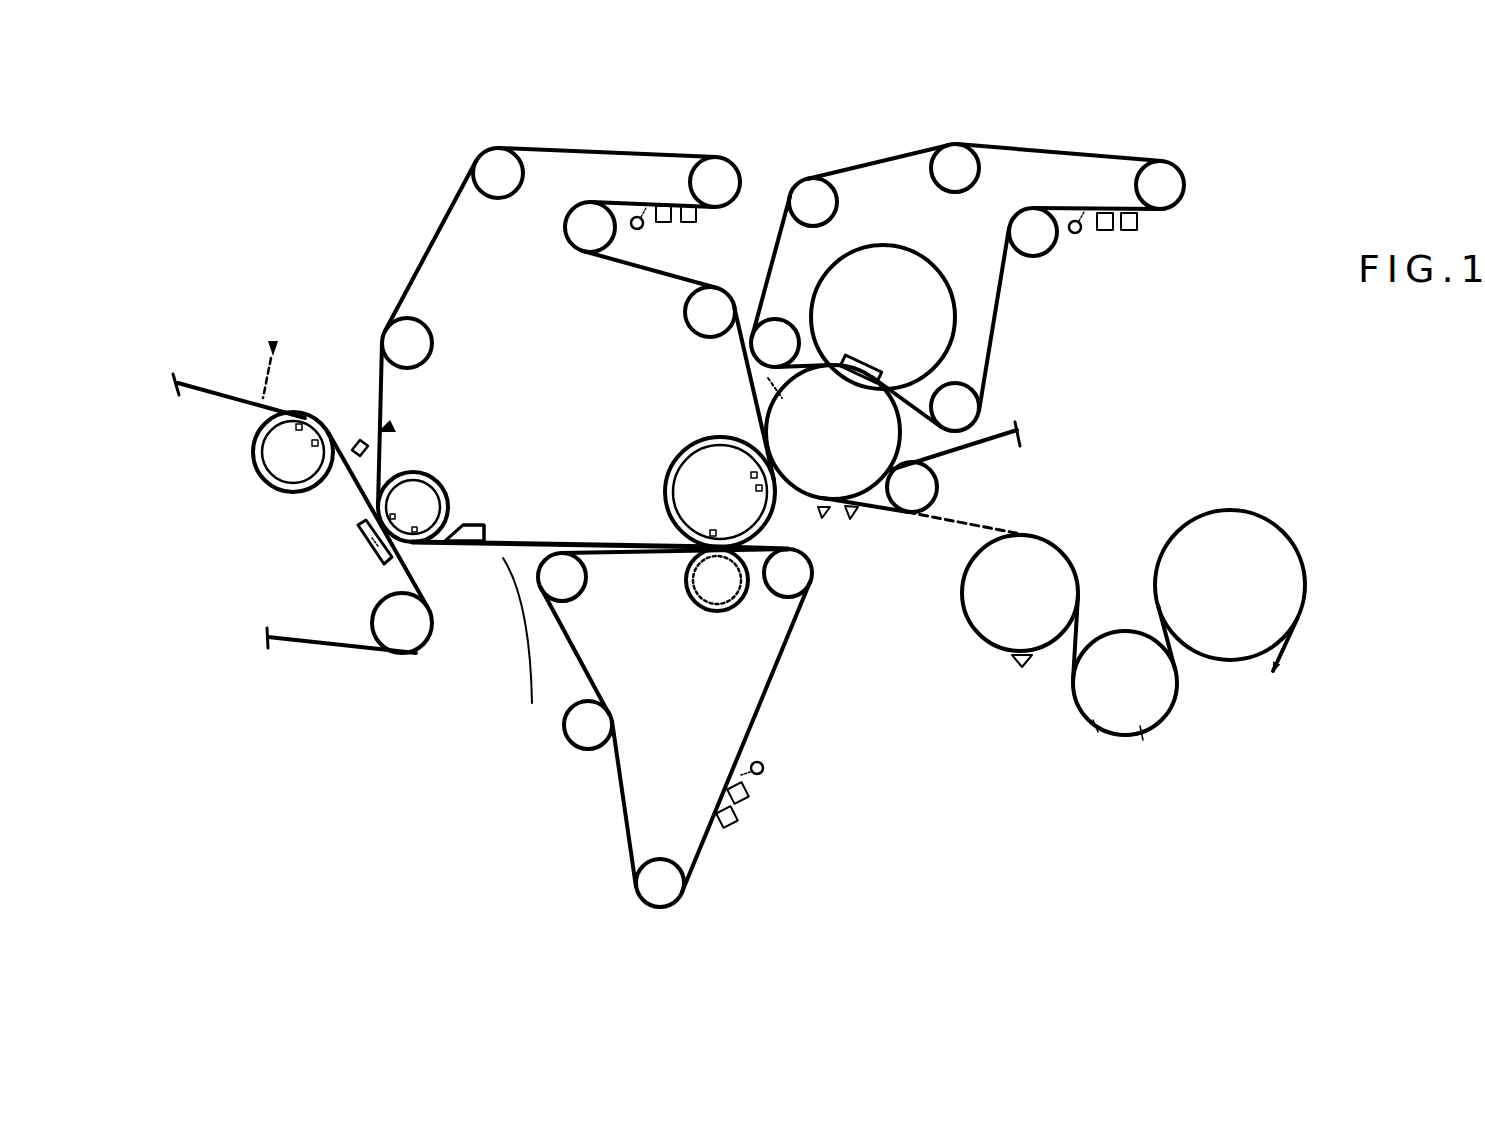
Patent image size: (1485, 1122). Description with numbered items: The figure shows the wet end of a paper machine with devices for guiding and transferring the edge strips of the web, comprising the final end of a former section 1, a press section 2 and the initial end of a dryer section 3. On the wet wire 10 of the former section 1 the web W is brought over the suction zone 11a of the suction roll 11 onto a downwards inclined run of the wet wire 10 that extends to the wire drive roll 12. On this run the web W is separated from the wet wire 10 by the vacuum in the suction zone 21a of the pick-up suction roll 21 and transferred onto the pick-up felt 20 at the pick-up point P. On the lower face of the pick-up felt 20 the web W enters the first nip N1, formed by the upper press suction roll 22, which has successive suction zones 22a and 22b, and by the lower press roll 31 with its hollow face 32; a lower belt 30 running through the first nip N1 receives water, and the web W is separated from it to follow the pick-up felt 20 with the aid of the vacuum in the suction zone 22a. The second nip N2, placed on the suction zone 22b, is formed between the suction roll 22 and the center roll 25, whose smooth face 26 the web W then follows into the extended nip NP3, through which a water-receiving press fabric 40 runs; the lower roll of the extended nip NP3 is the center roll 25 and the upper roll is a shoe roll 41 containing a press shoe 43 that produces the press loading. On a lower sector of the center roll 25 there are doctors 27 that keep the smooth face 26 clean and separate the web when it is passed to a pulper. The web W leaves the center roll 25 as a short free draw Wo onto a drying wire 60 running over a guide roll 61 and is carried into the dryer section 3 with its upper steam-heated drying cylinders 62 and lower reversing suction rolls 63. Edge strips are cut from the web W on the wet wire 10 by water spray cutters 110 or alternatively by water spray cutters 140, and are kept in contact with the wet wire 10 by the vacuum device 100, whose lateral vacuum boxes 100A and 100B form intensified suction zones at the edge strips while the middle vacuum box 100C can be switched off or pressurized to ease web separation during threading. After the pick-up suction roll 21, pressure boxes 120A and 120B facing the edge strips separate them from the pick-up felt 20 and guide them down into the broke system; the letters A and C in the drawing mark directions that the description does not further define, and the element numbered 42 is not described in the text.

The former section 1 is at (227, 298).
The press section 2 is at (818, 160).
The dryer section 3 is at (1181, 408).
The wet wire 10 is at (207, 381).
The suction roll 11 is at (273, 470).
The suction zone 11a is at (313, 430).
The wire drive roll 12 is at (407, 637).
The pick-up felt 20 is at (635, 153).
The pick-up suction roll 21 is at (415, 490).
The suction zone 21a is at (406, 523).
The upper press suction roll 22 is at (698, 468).
The suction zone 22a is at (738, 528).
The suction zone 22b is at (752, 478).
The center roll 25 is at (769, 410).
The smooth face 26 is at (776, 390).
The doctors 27 is at (843, 518).
The lower belt 30 is at (770, 698).
The press roll 31 is at (708, 580).
The hollow face 32 is at (722, 606).
The press fabric 40 is at (1068, 152).
The shoe roll 41 is at (918, 270).
The drum 42 is at (871, 243).
The press shoe 43 is at (850, 360).
The drying wire 60 is at (997, 440).
The guide roll 61 is at (925, 487).
The drying cylinders 62 is at (1063, 577).
The reversing suction rolls 63 is at (1090, 692).
The vacuum device 100 is at (350, 527).
The vacuum box 100A is at (379, 560).
The vacuum box 100B is at (309, 583).
The vacuum box 100C is at (310, 610).
The water spray cutters 110 is at (372, 422).
The pressure box 120A is at (470, 525).
The pressure box 120B is at (464, 533).
The water spray cutters 140 is at (262, 372).
The direction A is at (246, 572).
The direction C is at (487, 336).
The pick-up point P is at (362, 516).
The web W is at (478, 548).
The free draw Wo is at (882, 493).
The first nip N1 is at (684, 557).
The second nip N2 is at (775, 465).
The extended nip NP3 is at (871, 356).